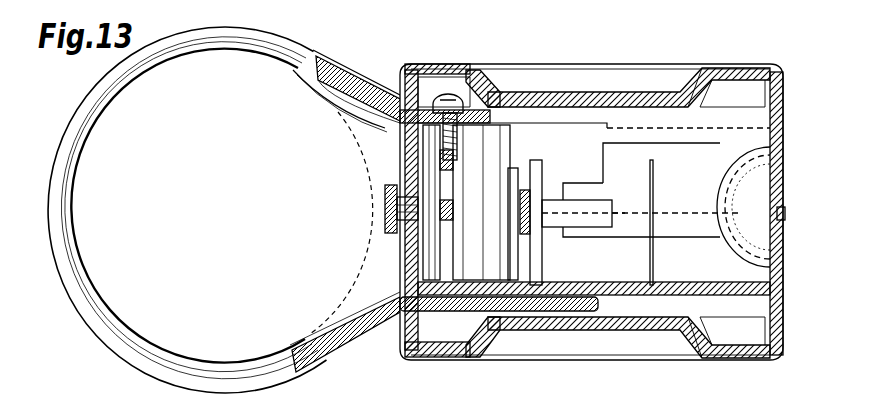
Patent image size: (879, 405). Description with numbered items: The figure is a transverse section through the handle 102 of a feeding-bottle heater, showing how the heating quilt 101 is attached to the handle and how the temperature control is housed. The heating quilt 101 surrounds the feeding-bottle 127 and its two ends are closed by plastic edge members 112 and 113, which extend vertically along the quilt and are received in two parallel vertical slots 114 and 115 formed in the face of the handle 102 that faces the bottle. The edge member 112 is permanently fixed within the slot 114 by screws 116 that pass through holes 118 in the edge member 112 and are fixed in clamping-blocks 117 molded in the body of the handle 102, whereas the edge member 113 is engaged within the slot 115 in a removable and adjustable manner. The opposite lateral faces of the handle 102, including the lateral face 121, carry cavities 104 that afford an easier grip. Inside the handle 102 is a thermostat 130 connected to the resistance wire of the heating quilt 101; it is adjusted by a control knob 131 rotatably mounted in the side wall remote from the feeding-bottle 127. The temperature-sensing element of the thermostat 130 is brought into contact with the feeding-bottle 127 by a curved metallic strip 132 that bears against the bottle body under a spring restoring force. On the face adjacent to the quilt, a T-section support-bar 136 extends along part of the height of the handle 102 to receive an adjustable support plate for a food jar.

The heating quilt 101 is at (77, 300).
The handle 102 is at (787, 88).
The cavities 104 is at (668, 70).
The edge member 112 is at (488, 86).
The edge member 113 is at (588, 312).
The slot 114 is at (378, 160).
The slot 115 is at (395, 310).
The screws 116 is at (447, 100).
The clamping-blocks 117 is at (488, 192).
The holes 118 is at (400, 97).
The lateral face 121 is at (597, 66).
The feeding-bottle 127 is at (318, 56).
The thermostat 130 is at (520, 172).
The control knob 131 is at (745, 200).
The metallic strip 132 is at (347, 130).
The T-section support-bar 136 is at (380, 210).